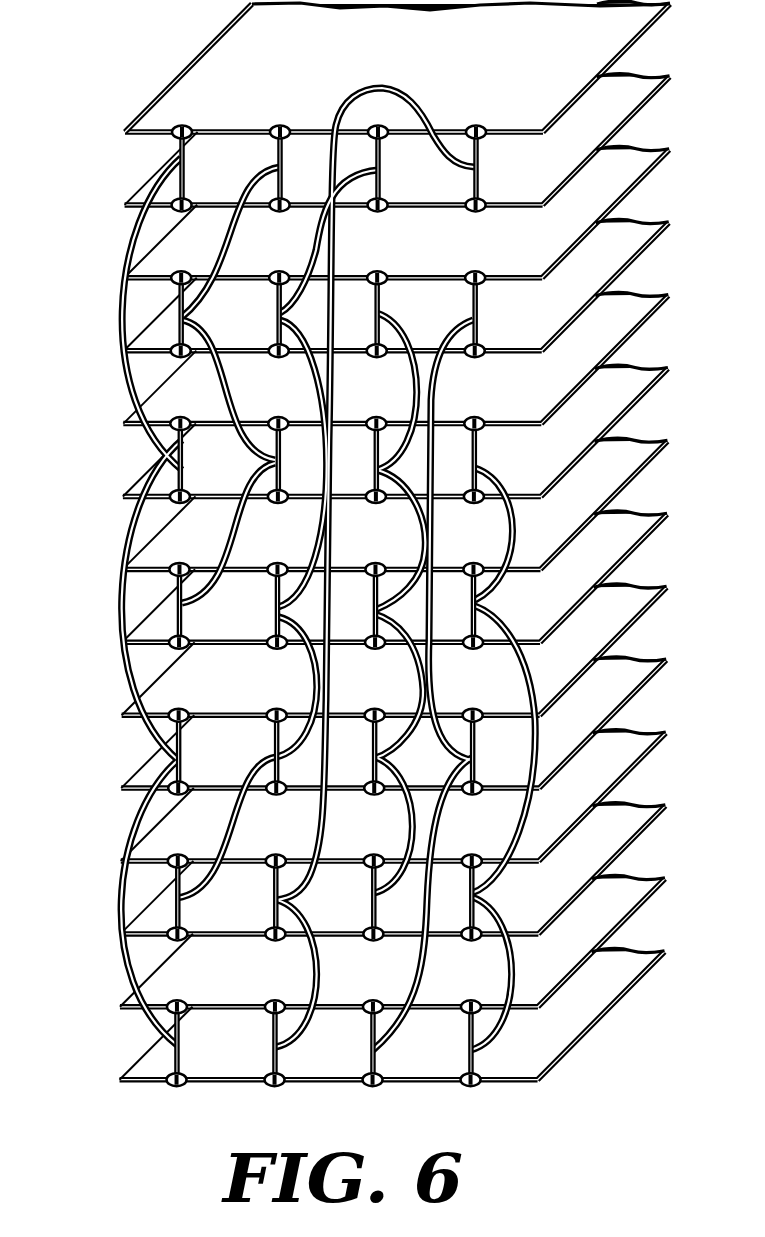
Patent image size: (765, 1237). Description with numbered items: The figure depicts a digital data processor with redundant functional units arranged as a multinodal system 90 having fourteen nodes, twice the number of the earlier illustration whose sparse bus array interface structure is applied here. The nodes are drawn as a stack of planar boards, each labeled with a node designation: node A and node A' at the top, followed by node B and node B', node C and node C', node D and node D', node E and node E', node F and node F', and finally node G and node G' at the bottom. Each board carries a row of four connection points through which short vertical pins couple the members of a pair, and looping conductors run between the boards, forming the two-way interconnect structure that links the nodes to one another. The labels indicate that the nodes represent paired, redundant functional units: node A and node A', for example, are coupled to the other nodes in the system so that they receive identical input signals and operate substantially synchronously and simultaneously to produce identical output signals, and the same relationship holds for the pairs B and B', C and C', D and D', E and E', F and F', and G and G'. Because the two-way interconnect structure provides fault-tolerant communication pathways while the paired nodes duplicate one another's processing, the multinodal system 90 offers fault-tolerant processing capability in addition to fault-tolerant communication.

The multinodal system 90 is at (125, 82).
The node A is at (397, 66).
The node A' is at (397, 139).
The node B is at (396, 212).
The node B' is at (396, 285).
The node C is at (395, 357).
The node C' is at (395, 430).
The node D is at (394, 503).
The node D' is at (394, 576).
The node E is at (394, 649).
The node E' is at (393, 722).
The node F is at (393, 795).
The node F' is at (392, 868).
The node G is at (392, 941).
The node G' is at (392, 1014).